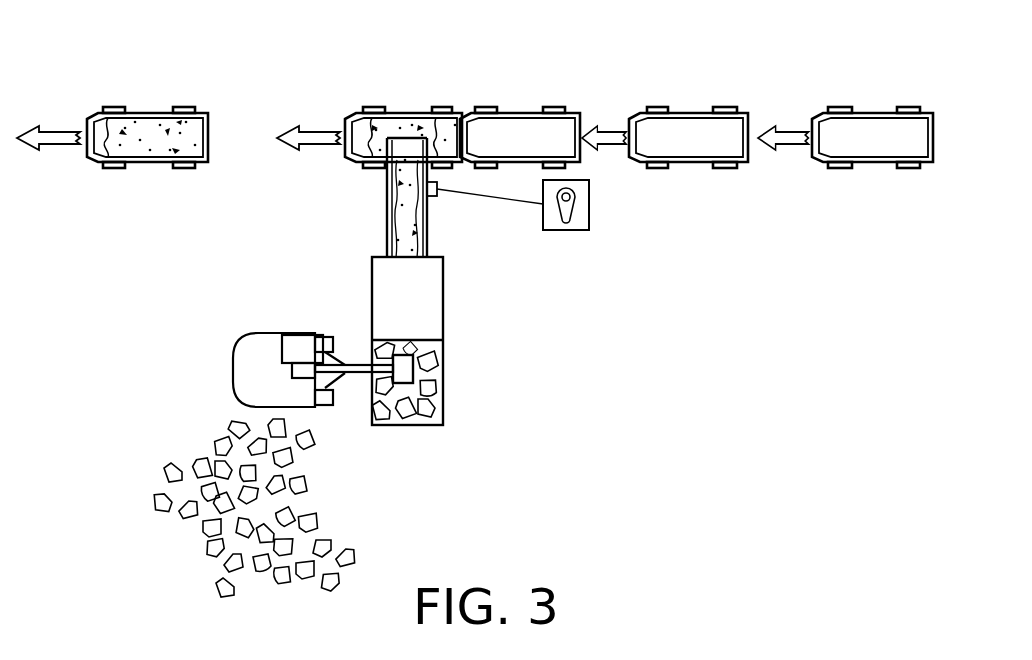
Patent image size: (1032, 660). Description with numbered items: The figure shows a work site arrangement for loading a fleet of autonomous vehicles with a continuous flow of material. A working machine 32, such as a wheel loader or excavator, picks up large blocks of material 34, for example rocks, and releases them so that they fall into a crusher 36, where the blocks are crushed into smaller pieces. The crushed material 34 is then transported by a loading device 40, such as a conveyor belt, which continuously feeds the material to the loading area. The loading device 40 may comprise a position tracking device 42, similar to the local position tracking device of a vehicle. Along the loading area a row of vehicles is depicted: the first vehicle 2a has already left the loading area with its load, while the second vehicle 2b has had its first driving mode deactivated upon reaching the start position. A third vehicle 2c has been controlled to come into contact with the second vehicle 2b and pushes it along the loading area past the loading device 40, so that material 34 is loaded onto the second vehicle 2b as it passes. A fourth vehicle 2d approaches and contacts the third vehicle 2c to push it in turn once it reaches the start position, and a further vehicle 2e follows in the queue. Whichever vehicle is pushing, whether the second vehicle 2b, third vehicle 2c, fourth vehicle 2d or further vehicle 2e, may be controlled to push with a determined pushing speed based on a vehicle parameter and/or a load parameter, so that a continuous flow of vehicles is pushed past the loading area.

The first vehicle 2a is at (152, 113).
The second vehicle 2b is at (405, 113).
The third vehicle 2c is at (525, 113).
The fourth vehicle 2d is at (695, 113).
The further vehicle 2e is at (877, 113).
The material 34 is at (133, 130).
The loading device 40 is at (387, 232).
The position tracking device 42 is at (572, 230).
The working machine 32 is at (233, 360).
The crusher 36 is at (435, 413).